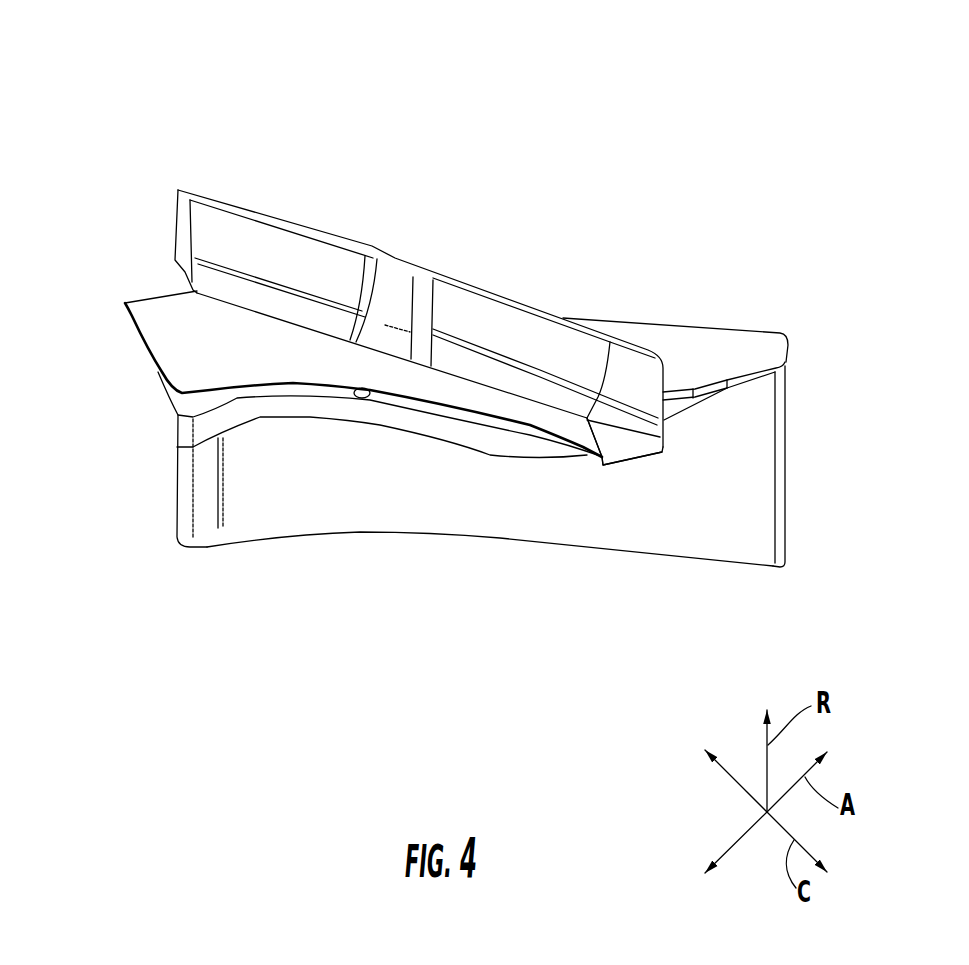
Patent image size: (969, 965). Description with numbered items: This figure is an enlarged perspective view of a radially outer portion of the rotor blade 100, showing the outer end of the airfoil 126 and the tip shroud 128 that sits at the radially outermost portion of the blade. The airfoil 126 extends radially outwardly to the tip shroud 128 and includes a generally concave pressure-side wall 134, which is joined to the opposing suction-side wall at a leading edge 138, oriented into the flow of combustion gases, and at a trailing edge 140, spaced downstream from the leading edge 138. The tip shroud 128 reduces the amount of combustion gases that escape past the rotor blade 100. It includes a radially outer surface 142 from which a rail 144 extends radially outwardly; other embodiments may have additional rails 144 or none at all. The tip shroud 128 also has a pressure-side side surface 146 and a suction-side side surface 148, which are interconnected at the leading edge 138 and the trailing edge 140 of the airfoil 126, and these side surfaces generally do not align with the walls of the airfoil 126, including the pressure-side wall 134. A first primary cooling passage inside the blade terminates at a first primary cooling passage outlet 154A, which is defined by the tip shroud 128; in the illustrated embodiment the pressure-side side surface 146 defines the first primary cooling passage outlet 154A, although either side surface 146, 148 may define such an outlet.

The rotor blade 100 is at (88, 107).
The airfoil 126 is at (510, 572).
The tip shroud 128 is at (478, 220).
The pressure-side wall 134 is at (394, 491).
The leading edge 138 is at (177, 477).
The trailing edge 140 is at (785, 470).
The radially outer surface 142 is at (211, 330).
The rail 144 is at (281, 218).
The pressure-side side surface 146 is at (578, 452).
The suction-side side surface 148 is at (613, 317).
The first primary cooling passage outlet 154A is at (357, 404).